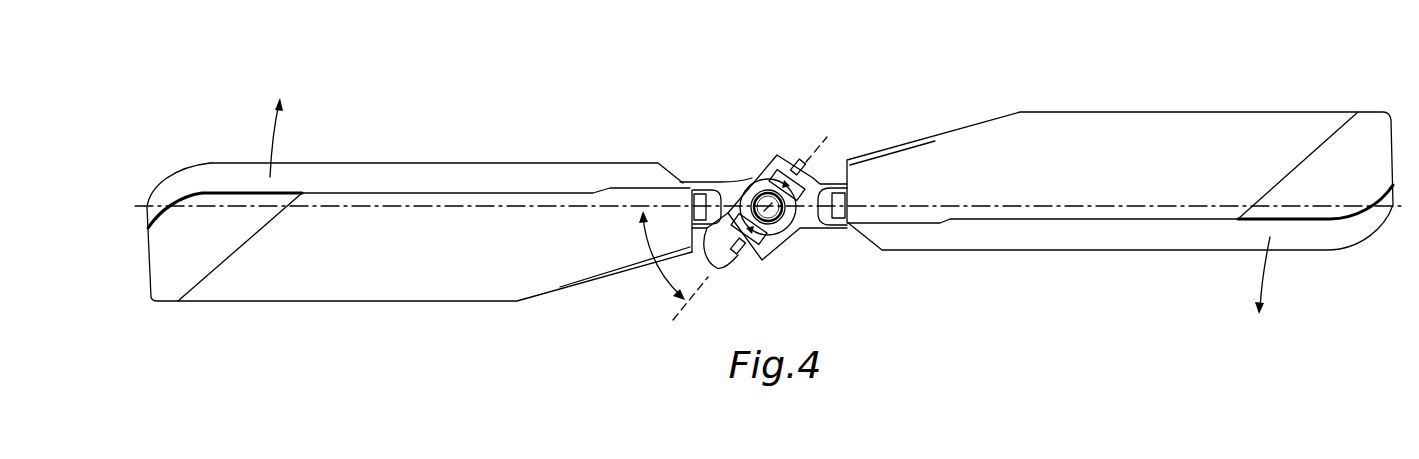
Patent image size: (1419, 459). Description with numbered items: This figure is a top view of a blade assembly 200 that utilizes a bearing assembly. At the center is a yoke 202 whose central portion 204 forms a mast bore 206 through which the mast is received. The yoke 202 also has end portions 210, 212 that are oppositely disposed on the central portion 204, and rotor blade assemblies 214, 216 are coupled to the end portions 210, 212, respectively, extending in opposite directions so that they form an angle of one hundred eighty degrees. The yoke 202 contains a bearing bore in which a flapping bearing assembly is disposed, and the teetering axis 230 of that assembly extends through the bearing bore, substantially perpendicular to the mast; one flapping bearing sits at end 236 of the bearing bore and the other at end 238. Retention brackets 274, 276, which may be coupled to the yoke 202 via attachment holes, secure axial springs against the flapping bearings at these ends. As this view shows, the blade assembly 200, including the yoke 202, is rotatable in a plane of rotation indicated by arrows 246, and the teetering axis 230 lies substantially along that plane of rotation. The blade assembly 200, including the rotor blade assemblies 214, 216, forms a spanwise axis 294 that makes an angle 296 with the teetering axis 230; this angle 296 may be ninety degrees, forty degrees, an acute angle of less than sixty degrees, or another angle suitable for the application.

The blade assembly 200 is at (597, 136).
The yoke 202 is at (822, 236).
The central portion 204 is at (763, 263).
The mast bore 206 is at (752, 180).
The end portion 210 is at (698, 180).
The end portion 212 is at (853, 235).
The rotor blade assembly 214 is at (432, 180).
The rotor blade assembly 216 is at (1200, 127).
The teetering axis 230 is at (828, 138).
The end of bearing bore 236 is at (733, 251).
The end of bearing bore 238 is at (822, 172).
The arrows 246 is at (1268, 273).
The retention bracket 274 is at (740, 251).
The retention bracket 276 is at (795, 164).
The spanwise axis 294 is at (352, 207).
The angle 296 is at (660, 272).